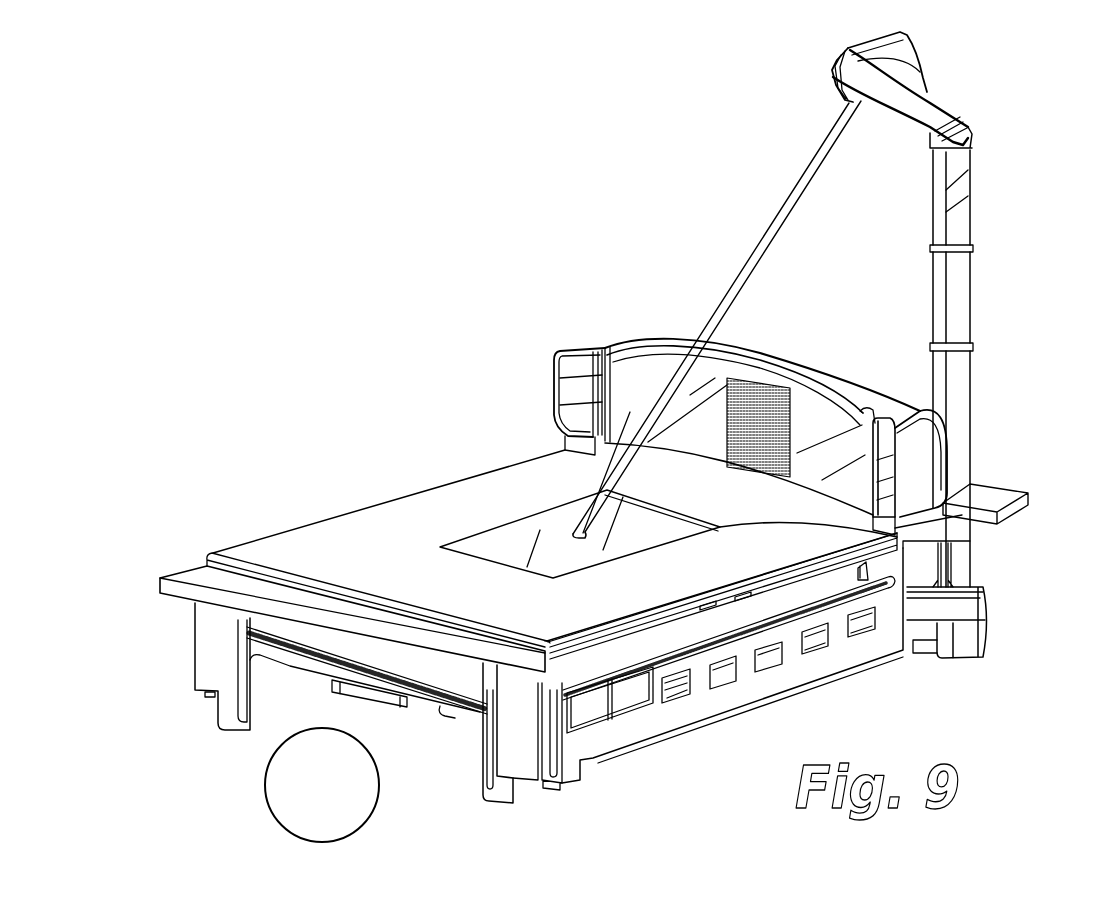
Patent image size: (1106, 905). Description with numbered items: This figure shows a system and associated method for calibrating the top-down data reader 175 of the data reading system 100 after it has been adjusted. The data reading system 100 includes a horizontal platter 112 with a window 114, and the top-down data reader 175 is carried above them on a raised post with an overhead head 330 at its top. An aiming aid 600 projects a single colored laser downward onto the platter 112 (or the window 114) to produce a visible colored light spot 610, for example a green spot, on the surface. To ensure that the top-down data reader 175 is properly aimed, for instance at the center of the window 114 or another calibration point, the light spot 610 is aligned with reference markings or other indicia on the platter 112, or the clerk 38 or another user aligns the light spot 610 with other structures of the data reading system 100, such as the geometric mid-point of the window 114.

The data reading system 100 is at (554, 282).
The platter 112 is at (331, 542).
The window 114 is at (673, 530).
The top-down data reader 175 is at (975, 157).
The overhead imaging head 330 is at (907, 68).
The aiming aid 600 is at (784, 123).
The light spot 610 is at (572, 533).
The clerk 38 is at (265, 787).